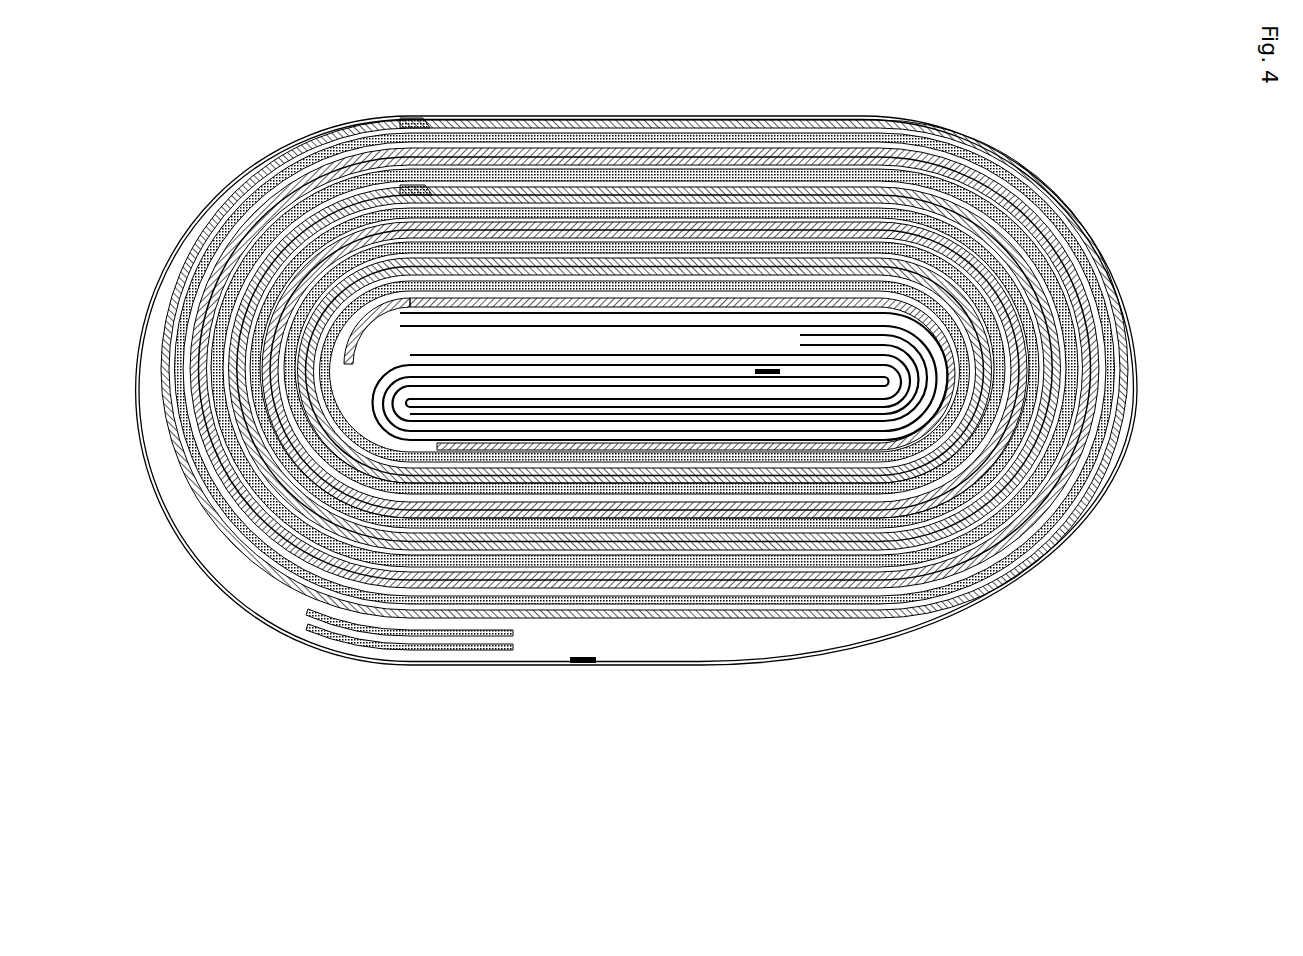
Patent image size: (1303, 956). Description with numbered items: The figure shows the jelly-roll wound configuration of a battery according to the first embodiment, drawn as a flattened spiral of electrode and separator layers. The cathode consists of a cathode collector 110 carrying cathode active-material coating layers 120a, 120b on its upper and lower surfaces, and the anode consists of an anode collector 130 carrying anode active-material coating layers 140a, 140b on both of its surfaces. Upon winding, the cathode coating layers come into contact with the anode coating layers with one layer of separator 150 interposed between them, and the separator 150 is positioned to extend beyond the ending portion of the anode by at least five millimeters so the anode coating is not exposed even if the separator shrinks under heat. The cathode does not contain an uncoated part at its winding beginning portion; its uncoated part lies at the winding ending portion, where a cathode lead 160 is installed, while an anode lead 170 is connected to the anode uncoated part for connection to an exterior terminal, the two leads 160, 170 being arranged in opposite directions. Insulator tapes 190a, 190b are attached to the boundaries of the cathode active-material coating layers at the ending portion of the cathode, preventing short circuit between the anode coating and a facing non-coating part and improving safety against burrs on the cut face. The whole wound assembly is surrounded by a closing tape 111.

The cathode collector 110 is at (647, 188).
The closing tape 111 is at (853, 657).
The cathode active-material coating layer 120a is at (777, 190).
The cathode active-material coating layer 120b is at (737, 185).
The anode collector 130 is at (1135, 410).
The anode active-material coating layer 140a is at (1133, 322).
The anode active-material coating layer 140b is at (1112, 358).
The separator 150 is at (490, 637).
The cathode lead 160 is at (600, 652).
The anode lead 170 is at (753, 370).
The insulator tape 190a is at (303, 222).
The insulator tape 190b is at (348, 125).